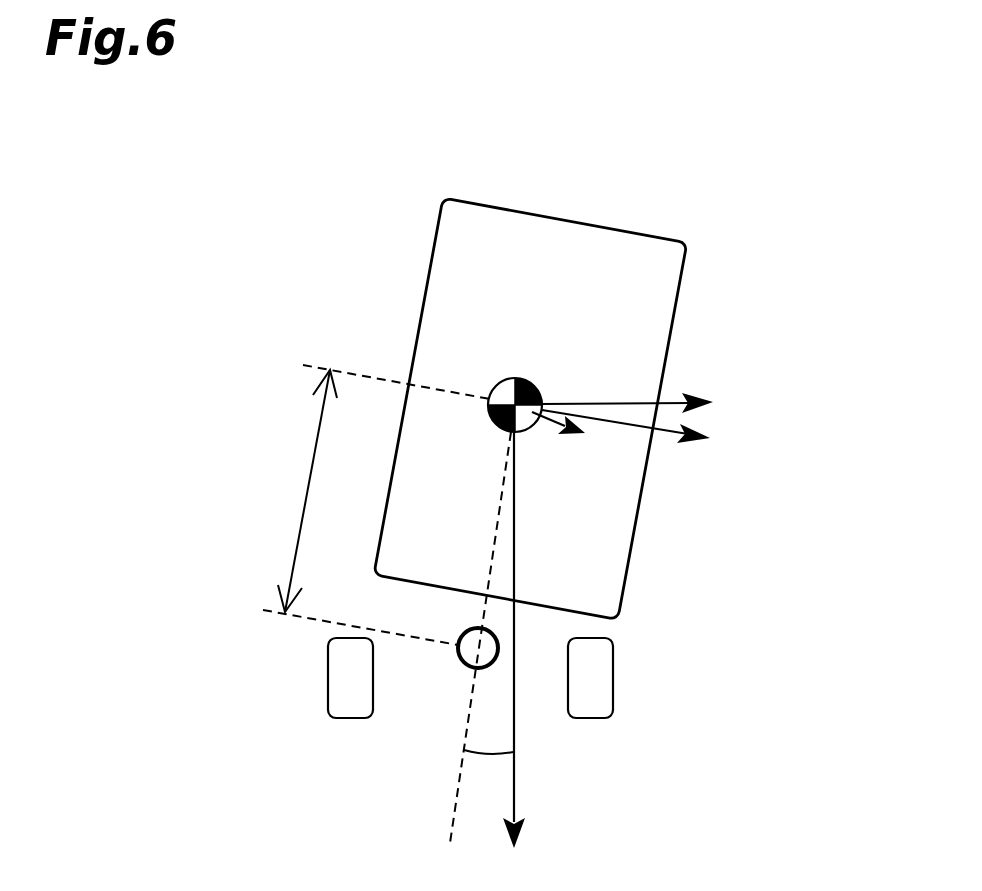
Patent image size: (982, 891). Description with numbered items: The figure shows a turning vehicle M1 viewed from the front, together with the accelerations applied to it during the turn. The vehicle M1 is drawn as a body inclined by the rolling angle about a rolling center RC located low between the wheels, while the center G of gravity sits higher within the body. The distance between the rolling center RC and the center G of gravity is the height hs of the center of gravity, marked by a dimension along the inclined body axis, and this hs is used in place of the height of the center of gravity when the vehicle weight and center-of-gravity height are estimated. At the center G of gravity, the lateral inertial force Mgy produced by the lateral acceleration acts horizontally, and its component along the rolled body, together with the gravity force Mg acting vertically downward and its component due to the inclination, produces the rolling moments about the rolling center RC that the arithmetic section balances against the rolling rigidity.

The vehicle M1 is at (575, 220).
The center of gravity G is at (504, 378).
The rolling center RC is at (467, 665).
The height of the center of gravity hs is at (298, 491).
The inertial force Mgy is at (598, 403).
The gravity force Mg is at (515, 675).